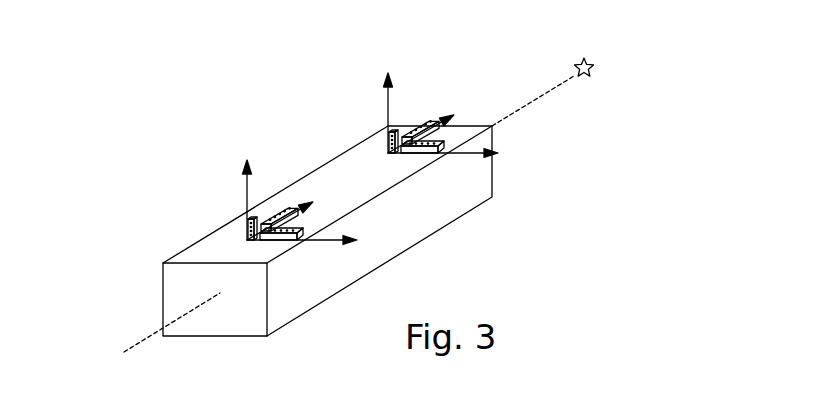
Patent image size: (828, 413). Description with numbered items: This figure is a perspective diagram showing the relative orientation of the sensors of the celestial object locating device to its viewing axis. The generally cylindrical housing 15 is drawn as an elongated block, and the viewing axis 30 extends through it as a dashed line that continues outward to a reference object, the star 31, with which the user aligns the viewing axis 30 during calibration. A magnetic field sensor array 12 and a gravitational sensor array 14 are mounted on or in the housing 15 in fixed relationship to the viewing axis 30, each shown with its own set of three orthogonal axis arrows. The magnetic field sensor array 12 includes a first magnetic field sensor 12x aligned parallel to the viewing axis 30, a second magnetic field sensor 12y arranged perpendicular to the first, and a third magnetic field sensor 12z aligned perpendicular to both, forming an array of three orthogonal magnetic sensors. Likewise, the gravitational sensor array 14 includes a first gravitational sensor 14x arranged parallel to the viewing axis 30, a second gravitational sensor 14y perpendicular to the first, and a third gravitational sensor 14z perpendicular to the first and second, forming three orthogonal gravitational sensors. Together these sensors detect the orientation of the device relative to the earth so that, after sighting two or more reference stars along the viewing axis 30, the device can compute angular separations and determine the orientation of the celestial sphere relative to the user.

The magnetic field sensor array 12 is at (401, 134).
The first magnetic field sensor 12x is at (428, 113).
The second magnetic field sensor 12y is at (433, 157).
The third magnetic field sensor 12z is at (376, 161).
The gravitational sensor array 14 is at (256, 218).
The first gravitational sensor 14x is at (279, 192).
The second gravitational sensor 14y is at (288, 241).
The third gravitational sensor 14z is at (225, 213).
The housing 15 is at (327, 231).
The viewing axis 30 is at (343, 214).
The star 31 is at (574, 63).